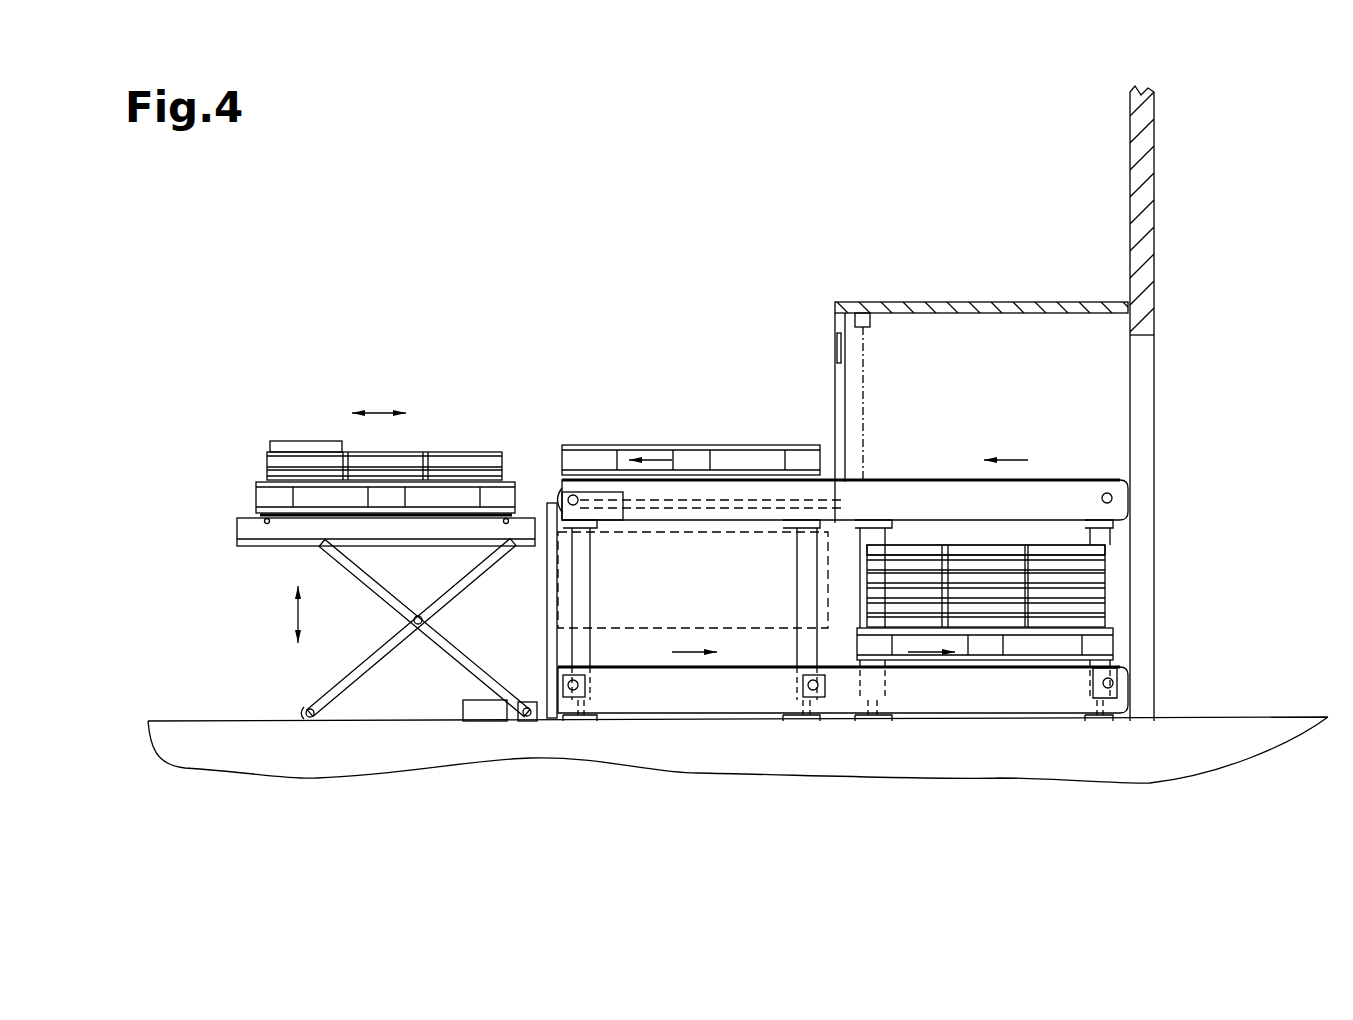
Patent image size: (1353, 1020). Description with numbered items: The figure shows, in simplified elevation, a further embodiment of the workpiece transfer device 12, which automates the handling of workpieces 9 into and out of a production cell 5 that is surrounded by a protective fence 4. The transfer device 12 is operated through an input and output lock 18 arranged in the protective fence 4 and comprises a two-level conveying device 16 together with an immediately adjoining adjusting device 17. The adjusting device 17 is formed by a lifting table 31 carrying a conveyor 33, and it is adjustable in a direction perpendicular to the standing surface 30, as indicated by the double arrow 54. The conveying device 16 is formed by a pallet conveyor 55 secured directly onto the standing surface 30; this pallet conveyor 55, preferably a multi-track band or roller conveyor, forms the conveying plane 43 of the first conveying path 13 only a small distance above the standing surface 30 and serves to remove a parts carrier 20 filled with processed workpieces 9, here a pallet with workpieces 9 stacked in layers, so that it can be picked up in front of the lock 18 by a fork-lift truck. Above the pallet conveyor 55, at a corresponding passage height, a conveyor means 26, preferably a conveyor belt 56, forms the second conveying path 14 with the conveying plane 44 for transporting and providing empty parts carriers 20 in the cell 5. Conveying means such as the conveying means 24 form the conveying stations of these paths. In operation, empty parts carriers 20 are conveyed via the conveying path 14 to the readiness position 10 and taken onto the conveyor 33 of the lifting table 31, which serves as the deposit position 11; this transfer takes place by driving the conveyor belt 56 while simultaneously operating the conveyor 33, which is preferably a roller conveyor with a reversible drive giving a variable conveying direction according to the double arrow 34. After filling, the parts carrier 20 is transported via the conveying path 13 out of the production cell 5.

The protective fence 4 is at (1140, 270).
The production cell 5 is at (1100, 216).
The workpieces 9 is at (293, 447).
The readiness position 10 is at (627, 403).
The depositing position 11 is at (365, 327).
The workpiece transfer device 12 is at (329, 350).
The first conveying path 13 is at (1114, 575).
The second conveying path 14 is at (1092, 472).
The conveying device 16 is at (1110, 358).
The adjusting device 17 is at (308, 619).
The input and output lock 18 is at (1142, 390).
The parts carrier 20 is at (251, 458).
The conveying means 24 is at (780, 702).
The conveyor means 26 is at (943, 482).
The standing surface 30 is at (1203, 714).
The lifting table 31 is at (224, 522).
The conveyor 33 is at (221, 489).
The double arrow 34 is at (377, 412).
The conveying plane 43 is at (642, 662).
The conveying plane 44 is at (738, 475).
The double arrow 54 is at (297, 610).
The pallet conveyor 55 is at (730, 692).
The conveyor belt 56 is at (893, 500).